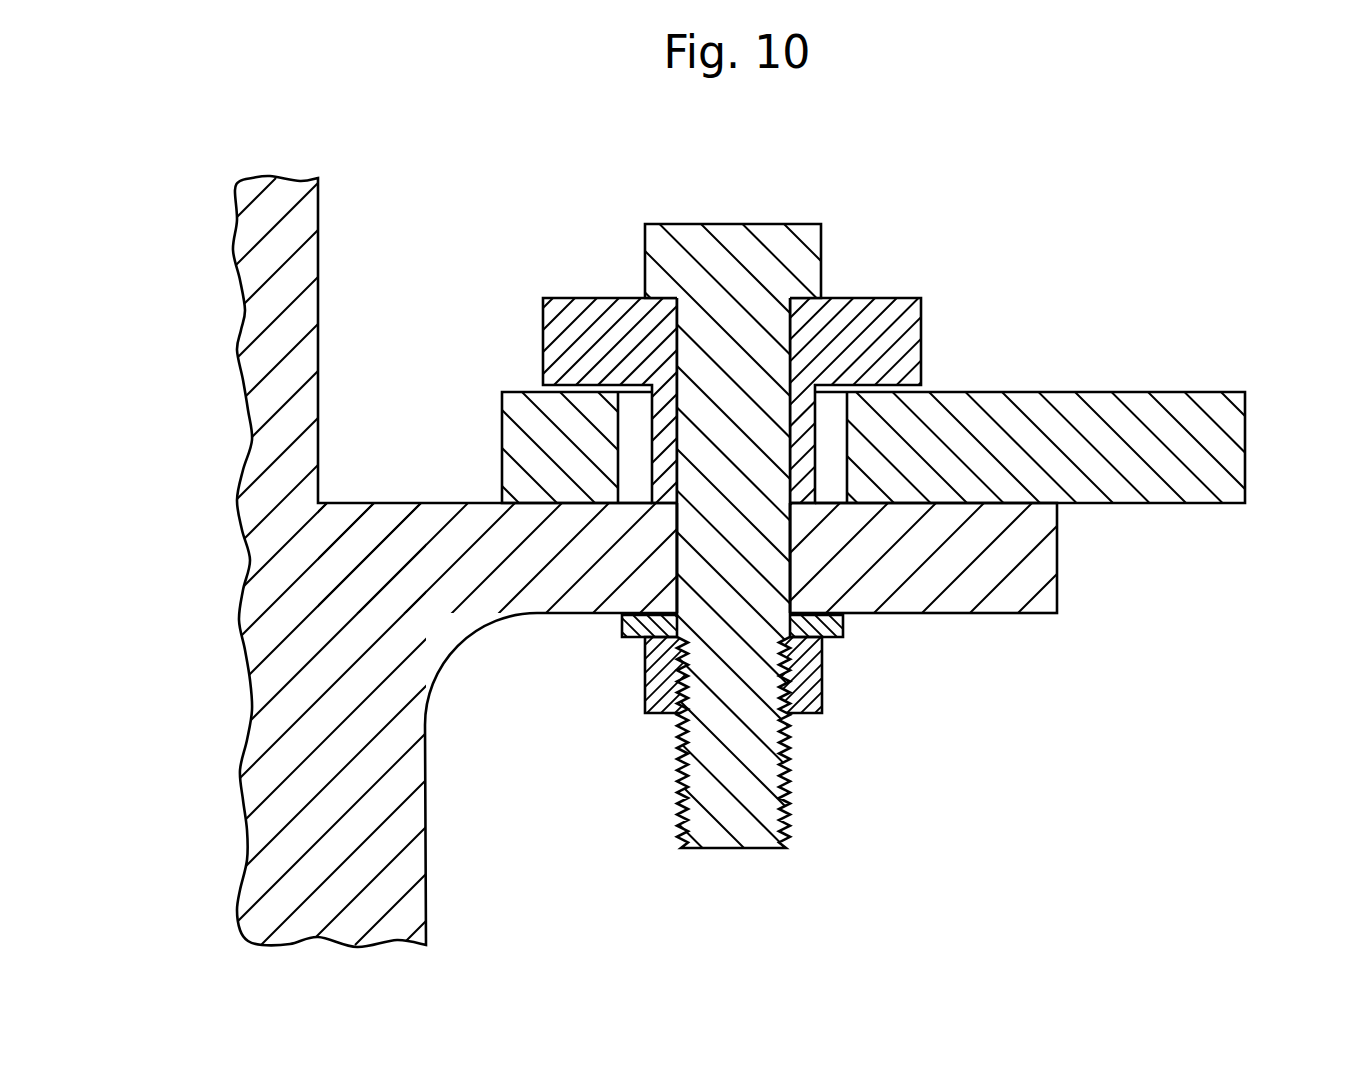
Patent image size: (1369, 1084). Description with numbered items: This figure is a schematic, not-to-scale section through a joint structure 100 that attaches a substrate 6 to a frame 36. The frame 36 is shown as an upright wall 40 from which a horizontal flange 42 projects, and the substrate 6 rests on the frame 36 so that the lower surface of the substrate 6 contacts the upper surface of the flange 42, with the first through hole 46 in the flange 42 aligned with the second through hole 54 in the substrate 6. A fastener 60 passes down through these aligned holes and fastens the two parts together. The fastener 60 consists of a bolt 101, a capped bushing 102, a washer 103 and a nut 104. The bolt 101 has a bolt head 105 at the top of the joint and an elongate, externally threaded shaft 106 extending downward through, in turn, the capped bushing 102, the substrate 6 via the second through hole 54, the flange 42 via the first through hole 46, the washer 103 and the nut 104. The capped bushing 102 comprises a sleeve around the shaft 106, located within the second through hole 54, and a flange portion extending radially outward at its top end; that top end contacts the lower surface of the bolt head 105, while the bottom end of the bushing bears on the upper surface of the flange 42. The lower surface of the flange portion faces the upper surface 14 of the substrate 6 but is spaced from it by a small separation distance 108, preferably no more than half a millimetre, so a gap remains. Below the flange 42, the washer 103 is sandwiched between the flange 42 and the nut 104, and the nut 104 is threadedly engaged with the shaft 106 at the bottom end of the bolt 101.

The joint structure 100 is at (684, 517).
The frame 36 is at (584, 544).
The wall of frame member 40 is at (272, 475).
The flange 42 is at (557, 570).
The upper surface of the substrate 14 is at (870, 396).
The substrate 6 is at (517, 433).
The second through hole 54 is at (633, 457).
The fastener 60 is at (724, 519).
The bolt 101 is at (724, 519).
The capped bushing 102 is at (618, 313).
The separation distance 108 is at (676, 351).
The bolt head 105 is at (732, 240).
The shaft 106 is at (725, 813).
The washer 103 is at (835, 632).
The nut 104 is at (808, 690).
The first through hole 46 is at (681, 562).